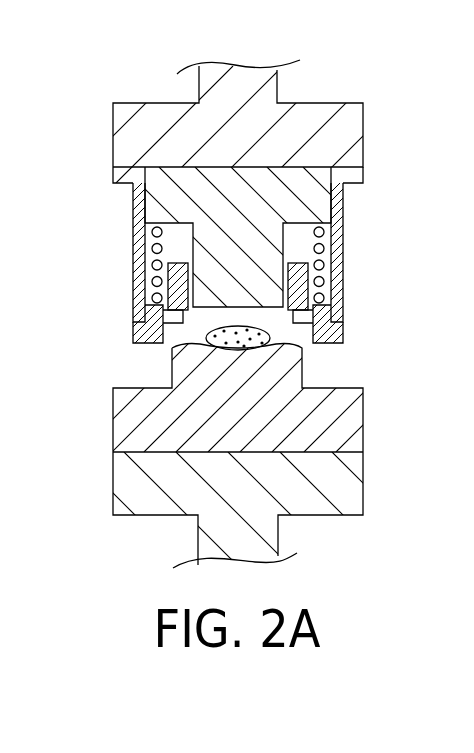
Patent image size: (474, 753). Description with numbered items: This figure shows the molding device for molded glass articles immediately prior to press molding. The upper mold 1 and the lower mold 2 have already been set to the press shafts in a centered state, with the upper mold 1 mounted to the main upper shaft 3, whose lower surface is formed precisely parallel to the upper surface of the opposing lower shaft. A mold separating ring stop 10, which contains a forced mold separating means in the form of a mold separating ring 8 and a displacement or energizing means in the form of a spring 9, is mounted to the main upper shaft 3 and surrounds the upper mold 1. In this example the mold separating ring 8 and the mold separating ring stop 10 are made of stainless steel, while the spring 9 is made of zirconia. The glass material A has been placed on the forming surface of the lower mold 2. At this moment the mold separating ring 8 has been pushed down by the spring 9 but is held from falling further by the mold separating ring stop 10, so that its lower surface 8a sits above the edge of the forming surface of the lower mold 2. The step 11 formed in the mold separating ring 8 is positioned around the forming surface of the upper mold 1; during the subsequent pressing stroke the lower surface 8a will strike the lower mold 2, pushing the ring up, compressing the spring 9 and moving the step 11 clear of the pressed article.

The upper mold 1 is at (183, 190).
The lower mold 2 is at (153, 416).
The main upper shaft 3 is at (292, 140).
The mold separating ring 8 is at (133, 325).
The lower surface of mold separating ring 8a is at (183, 318).
The spring 9 is at (150, 243).
The mold separating ring stop 10 is at (135, 273).
The step 11 is at (132, 252).
The glass material A is at (243, 350).